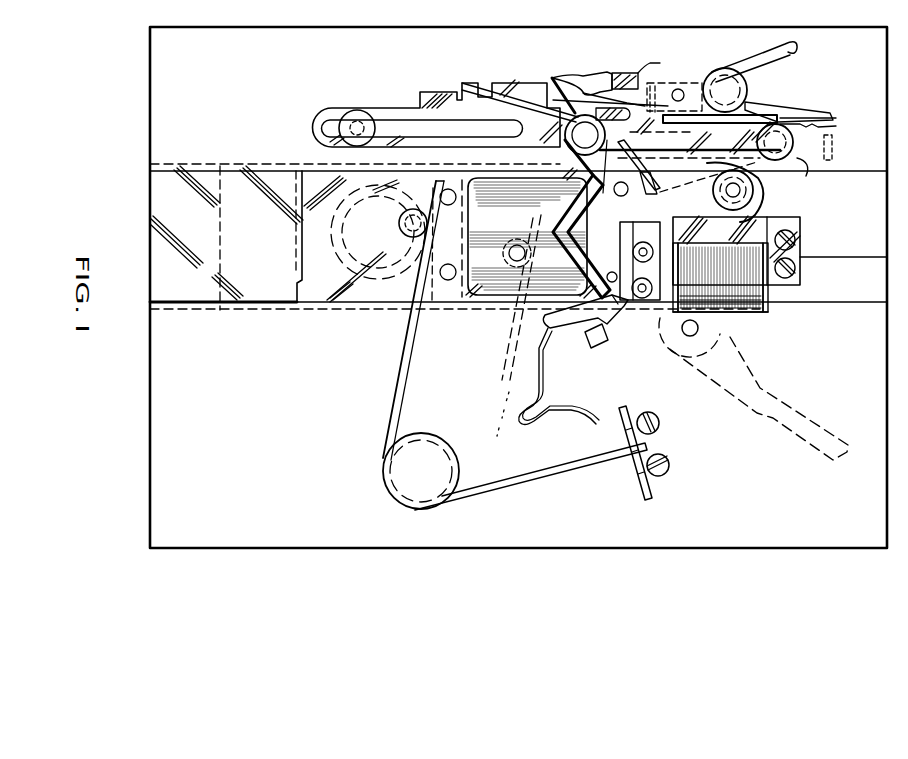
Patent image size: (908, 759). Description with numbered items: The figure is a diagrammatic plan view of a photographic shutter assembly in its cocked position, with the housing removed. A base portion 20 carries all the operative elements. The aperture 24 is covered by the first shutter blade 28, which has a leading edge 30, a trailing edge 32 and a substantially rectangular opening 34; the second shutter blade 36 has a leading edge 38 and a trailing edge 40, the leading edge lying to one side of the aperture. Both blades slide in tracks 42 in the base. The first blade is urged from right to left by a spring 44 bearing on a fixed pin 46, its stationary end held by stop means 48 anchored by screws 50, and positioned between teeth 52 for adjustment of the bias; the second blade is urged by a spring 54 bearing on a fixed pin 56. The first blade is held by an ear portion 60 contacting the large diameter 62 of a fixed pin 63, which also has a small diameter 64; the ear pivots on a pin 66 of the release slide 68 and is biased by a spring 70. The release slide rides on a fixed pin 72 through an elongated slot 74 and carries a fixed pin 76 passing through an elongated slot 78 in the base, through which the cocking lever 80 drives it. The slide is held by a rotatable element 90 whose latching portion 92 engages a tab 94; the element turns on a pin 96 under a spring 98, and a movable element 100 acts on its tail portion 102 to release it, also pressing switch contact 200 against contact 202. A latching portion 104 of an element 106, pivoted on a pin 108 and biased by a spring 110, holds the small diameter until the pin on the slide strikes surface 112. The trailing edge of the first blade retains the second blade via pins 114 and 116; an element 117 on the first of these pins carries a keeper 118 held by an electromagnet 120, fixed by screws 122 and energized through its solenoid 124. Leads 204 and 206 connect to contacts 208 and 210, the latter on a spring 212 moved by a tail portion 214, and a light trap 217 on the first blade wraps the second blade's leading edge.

The base portion 20 is at (175, 435).
The aperture 24 is at (370, 303).
The first shutter blade 28 is at (322, 176).
The leading edge 30 is at (293, 233).
The trailing edge 32 is at (722, 250).
The opening 34 is at (474, 297).
The second shutter blade 36 is at (521, 305).
The leading edge 38 is at (470, 238).
The trailing edge 40 is at (686, 335).
The tracks 42 is at (226, 238).
The spring 44 is at (392, 395).
The fixed pin 46 is at (399, 225).
The stop means 48 is at (642, 476).
The screws 50 is at (670, 462).
The teeth 52 is at (640, 445).
The spring 54 is at (505, 377).
The fixed pin 56 is at (518, 240).
The ear portion 60 is at (588, 178).
The large diameter 62 is at (621, 196).
The fixed pin 63 is at (592, 205).
The small diameter 64 is at (646, 196).
The pin 66 is at (565, 134).
The release slide 68 is at (430, 95).
The spring 70 is at (522, 92).
The fixed pin 72 is at (356, 115).
The elongated slot 74 is at (438, 148).
The fixed pin 76 is at (810, 165).
The elongated slot 78 is at (705, 155).
The cocking lever 80 is at (770, 386).
The rotatable element 90 is at (672, 78).
The latching portion 92 is at (597, 78).
The tab 94 is at (622, 73).
The pin 96 is at (733, 88).
The spring 98 is at (752, 60).
The movable element 100 is at (836, 146).
The tail portion 102 is at (816, 106).
The latching portion 104 is at (590, 188).
The element 106 is at (707, 205).
The pin 108 is at (758, 200).
The spring 110 is at (762, 168).
The surface 112 is at (650, 148).
The pin 114 is at (636, 253).
The pin 116 is at (641, 304).
The element 117 is at (618, 245).
The keeper 118 is at (700, 236).
The electromagnet 120 is at (778, 296).
The screws 122 is at (800, 268).
The solenoid 124 is at (747, 310).
The switch contact 200 is at (838, 124).
The switch contact 202 is at (838, 118).
The lead 204 is at (545, 332).
The lead 206 is at (598, 420).
The switch contact 208 is at (560, 330).
The switch contact 210 is at (570, 345).
The spring 212 is at (545, 383).
The tail portion 214 is at (532, 280).
The light trap 217 is at (434, 305).